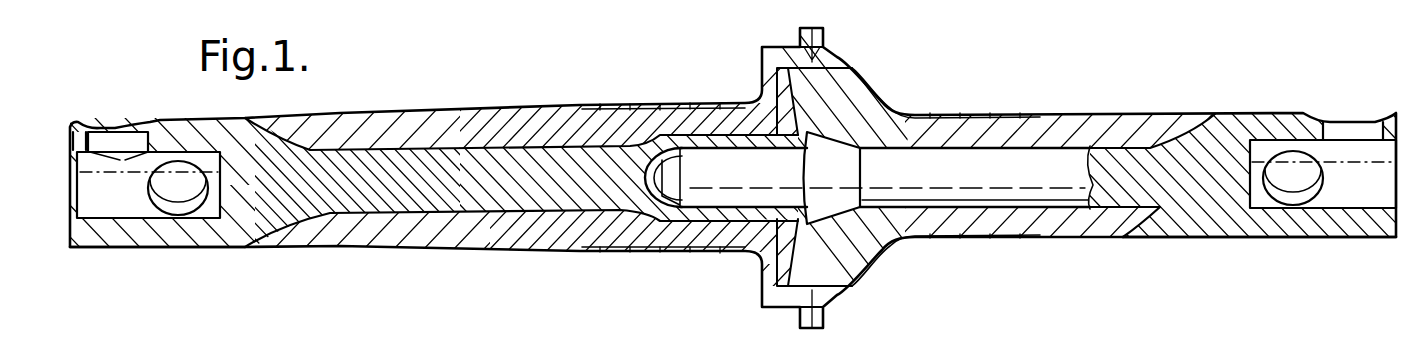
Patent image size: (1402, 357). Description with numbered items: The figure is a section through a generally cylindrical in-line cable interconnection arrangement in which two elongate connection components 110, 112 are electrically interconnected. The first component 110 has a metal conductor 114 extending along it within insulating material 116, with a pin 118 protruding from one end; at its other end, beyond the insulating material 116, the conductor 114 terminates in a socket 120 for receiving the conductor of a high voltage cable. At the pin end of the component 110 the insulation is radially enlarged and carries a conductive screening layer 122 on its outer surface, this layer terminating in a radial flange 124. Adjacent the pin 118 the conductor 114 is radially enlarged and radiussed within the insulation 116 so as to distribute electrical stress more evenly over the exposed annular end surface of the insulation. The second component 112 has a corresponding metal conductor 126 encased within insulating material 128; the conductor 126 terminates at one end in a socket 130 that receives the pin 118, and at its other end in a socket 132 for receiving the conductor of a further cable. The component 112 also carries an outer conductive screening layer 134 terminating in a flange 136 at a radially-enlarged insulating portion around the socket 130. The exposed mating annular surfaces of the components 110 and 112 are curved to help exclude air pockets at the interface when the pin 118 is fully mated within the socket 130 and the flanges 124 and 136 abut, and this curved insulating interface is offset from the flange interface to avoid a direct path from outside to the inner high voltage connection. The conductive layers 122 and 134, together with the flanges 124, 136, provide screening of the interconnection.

The connection component 110 is at (1075, 242).
The connection component 112 is at (461, 249).
The metal conductor 114 is at (1157, 190).
The insulating material 116 is at (1193, 220).
The pin 118 is at (728, 198).
The socket 120 is at (1368, 205).
The conductive screening layer 122 is at (992, 112).
The radial flange 124 is at (826, 312).
The metal conductor 126 is at (492, 167).
The insulating material 128 is at (377, 130).
The socket 130 is at (675, 222).
The socket 132 is at (137, 205).
The outer conductive screening layer 134 is at (678, 105).
The flange 136 is at (803, 312).